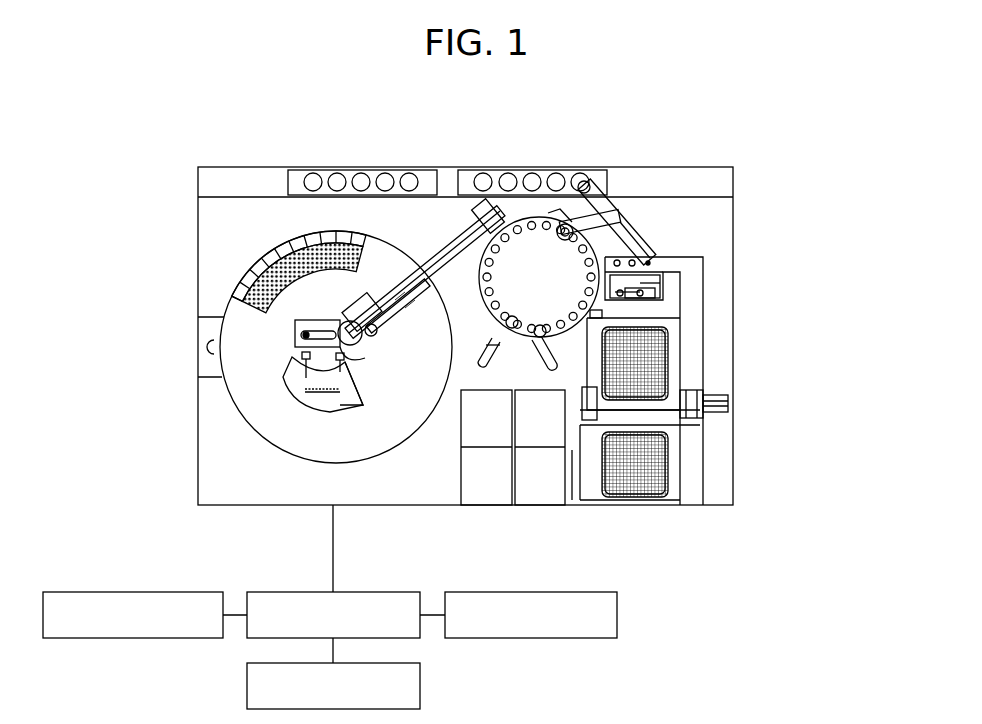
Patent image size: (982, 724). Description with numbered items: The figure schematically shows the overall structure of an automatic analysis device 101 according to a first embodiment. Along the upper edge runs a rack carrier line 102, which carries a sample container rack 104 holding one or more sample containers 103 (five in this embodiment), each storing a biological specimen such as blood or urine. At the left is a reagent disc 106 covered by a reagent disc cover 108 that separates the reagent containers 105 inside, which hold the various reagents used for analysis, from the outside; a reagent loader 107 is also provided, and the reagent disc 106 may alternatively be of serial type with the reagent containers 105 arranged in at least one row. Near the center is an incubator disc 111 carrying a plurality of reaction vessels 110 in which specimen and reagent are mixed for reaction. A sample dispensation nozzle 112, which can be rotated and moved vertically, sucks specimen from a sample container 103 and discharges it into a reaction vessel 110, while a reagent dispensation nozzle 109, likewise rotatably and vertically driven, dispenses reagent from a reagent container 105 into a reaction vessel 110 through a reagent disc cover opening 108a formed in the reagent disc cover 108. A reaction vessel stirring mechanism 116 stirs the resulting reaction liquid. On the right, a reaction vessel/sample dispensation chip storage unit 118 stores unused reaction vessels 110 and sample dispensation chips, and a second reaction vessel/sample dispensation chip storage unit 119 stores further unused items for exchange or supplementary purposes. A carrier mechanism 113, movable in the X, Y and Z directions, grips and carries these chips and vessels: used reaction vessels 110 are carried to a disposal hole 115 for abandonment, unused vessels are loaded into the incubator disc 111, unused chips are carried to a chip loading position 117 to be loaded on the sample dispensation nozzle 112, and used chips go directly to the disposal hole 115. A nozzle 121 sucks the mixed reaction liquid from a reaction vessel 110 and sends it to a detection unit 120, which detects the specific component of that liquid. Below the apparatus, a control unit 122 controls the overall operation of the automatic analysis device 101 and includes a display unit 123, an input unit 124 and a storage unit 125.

The automatic analysis device 101 is at (612, 165).
The rack carrier line 102 is at (258, 181).
The sample container 103 is at (308, 180).
The sample container rack 104 is at (428, 172).
The reagent container 105 is at (237, 303).
The reagent disc 106 is at (286, 453).
The reagent loader 107 is at (336, 324).
The reagent disc cover 108 is at (393, 402).
The reagent disc cover opening 108a is at (417, 303).
The reagent dispensation nozzle 109 is at (478, 212).
The reaction vessel 110 is at (500, 228).
The incubator disc 111 is at (535, 243).
The sample dispensation nozzle 112 is at (625, 216).
The carrier mechanism 113 is at (672, 262).
The disposal hole 115 is at (622, 273).
The reaction vessel stirring mechanism 116 is at (618, 291).
The chip loading position 117 is at (617, 305).
The reaction vessel/sample dispensation chip storage unit 118 is at (657, 378).
The reaction vessel/sample dispensation chip storage unit for exchange/supplementary 119 is at (640, 470).
The detection unit 120 is at (493, 482).
The nozzle 121 is at (493, 358).
The control unit 122 is at (400, 592).
The display unit 123 is at (98, 575).
The input unit 124 is at (420, 688).
The storage unit 125 is at (503, 577).